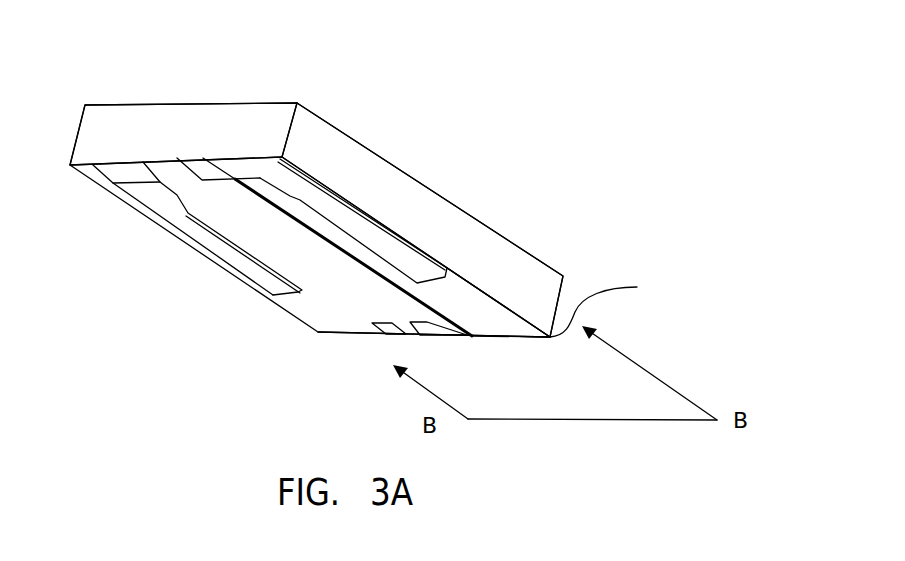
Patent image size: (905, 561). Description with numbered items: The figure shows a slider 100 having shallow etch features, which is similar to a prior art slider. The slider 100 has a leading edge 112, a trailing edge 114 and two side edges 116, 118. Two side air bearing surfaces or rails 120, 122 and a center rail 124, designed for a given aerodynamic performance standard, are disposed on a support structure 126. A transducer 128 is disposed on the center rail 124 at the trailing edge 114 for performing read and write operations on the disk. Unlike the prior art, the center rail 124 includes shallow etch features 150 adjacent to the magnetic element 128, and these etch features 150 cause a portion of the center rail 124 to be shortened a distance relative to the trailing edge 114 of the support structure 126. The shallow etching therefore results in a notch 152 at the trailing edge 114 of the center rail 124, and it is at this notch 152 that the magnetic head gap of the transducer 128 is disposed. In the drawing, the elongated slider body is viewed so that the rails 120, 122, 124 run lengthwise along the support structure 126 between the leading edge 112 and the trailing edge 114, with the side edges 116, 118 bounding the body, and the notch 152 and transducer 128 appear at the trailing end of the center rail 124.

The slider 100 is at (503, 116).
The leading edge 112 is at (180, 132).
The trailing edge 114 is at (630, 286).
The side edge 116 is at (458, 225).
The side edge 118 is at (190, 247).
The side air bearing surface or rail 120 is at (338, 225).
The side air bearing surface or rail 122 is at (227, 253).
The center rail 124 is at (350, 287).
The support structure 126 is at (480, 307).
The transducer 128 is at (420, 337).
The shallow etch features 150 is at (470, 335).
The notch 152 is at (437, 337).